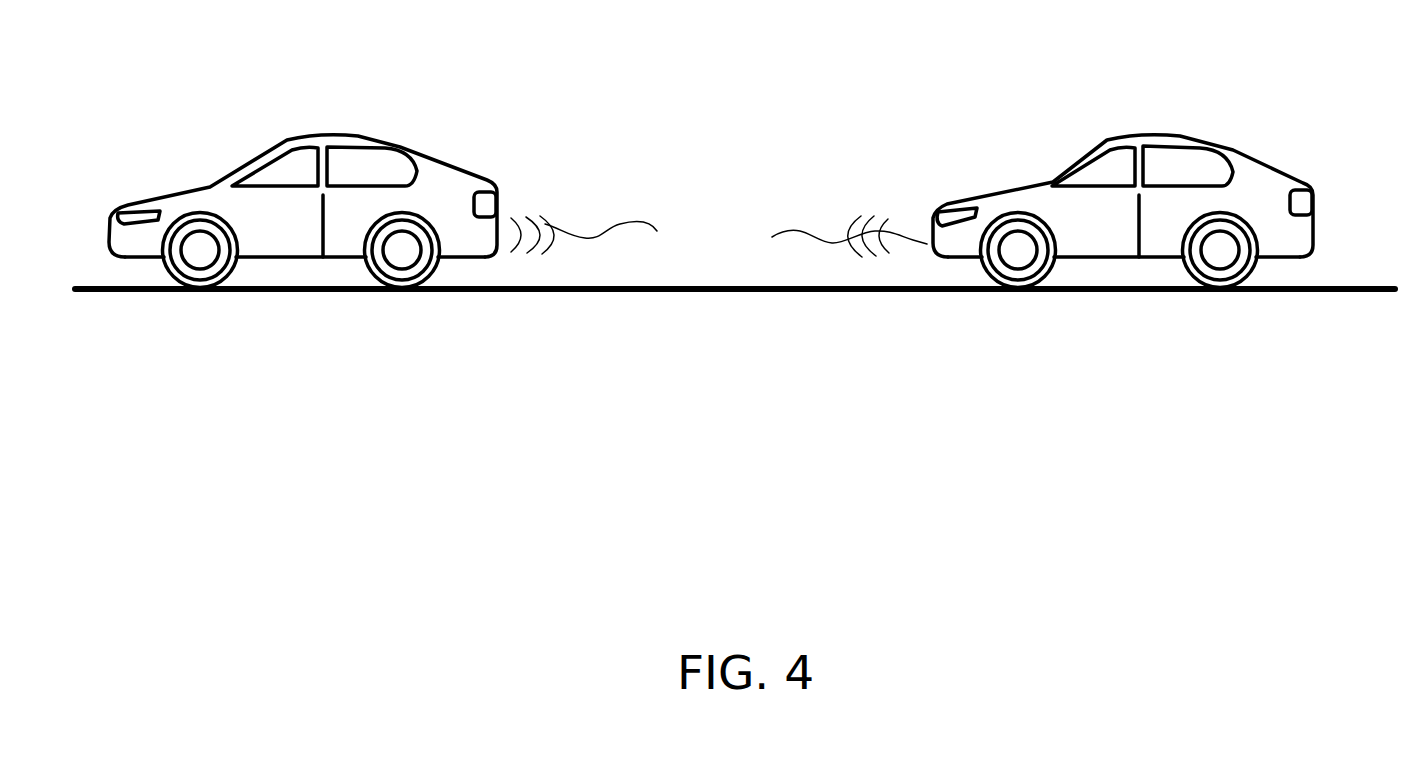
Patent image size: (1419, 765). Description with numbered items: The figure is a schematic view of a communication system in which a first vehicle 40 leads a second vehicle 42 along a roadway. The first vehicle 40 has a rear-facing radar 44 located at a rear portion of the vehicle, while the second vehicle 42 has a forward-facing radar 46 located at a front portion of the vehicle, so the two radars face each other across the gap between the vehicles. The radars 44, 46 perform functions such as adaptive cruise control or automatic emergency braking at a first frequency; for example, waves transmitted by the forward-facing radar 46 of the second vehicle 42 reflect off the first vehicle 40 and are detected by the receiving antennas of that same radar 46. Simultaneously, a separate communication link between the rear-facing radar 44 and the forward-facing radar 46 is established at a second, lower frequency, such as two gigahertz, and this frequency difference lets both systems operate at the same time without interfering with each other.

The first vehicle 40 is at (320, 137).
The second vehicle 42 is at (1138, 137).
The rear-facing radar 44 is at (500, 235).
The forward-facing radar 46 is at (927, 243).